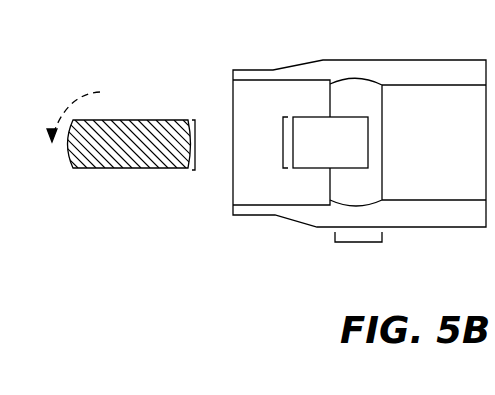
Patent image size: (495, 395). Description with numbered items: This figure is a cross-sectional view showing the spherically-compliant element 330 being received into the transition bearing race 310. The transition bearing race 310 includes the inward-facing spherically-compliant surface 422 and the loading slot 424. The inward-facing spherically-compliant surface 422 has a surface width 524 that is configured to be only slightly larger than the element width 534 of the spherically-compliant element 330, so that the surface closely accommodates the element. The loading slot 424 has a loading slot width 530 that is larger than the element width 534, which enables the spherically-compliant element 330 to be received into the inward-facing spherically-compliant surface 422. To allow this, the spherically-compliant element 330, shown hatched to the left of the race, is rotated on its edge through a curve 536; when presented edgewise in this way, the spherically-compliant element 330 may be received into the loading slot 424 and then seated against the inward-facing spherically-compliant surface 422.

The transition bearing race 310 is at (326, 57).
The inward-facing spherically-compliant surface 422 is at (356, 98).
The loading slot 424 is at (323, 160).
The loading slot width 530 is at (248, 158).
The surface width 524 is at (347, 265).
The element width 534 is at (208, 123).
The spherically-compliant element 330 is at (133, 157).
The curve 536 is at (72, 100).